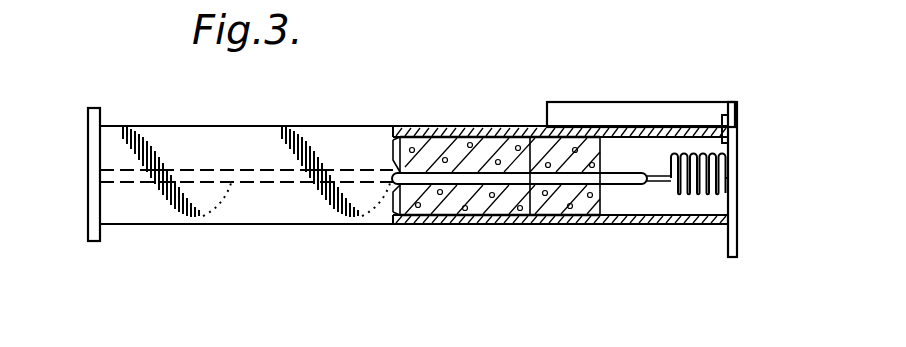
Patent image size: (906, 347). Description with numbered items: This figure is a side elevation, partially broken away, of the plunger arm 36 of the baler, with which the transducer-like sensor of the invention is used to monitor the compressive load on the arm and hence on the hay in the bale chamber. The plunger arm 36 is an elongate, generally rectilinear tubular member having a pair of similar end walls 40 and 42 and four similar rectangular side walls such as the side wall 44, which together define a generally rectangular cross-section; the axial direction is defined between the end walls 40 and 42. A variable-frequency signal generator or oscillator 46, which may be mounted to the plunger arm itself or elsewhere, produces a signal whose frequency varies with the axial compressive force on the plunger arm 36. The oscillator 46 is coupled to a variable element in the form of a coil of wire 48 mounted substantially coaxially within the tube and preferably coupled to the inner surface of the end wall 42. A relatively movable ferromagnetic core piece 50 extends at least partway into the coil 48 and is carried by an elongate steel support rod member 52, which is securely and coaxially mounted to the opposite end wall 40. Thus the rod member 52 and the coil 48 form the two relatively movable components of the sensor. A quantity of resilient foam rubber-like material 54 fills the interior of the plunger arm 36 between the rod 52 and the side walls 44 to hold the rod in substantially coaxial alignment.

The plunger arm 36 is at (310, 230).
The end wall 40 is at (88, 183).
The end wall 42 is at (738, 168).
The side wall 44 is at (397, 98).
The oscillator 46 is at (606, 60).
The coil of wire 48 is at (700, 197).
The ferromagnetic core piece 50 is at (656, 190).
The support rod member 52 is at (521, 223).
The foam rubber-like material 54 is at (455, 223).